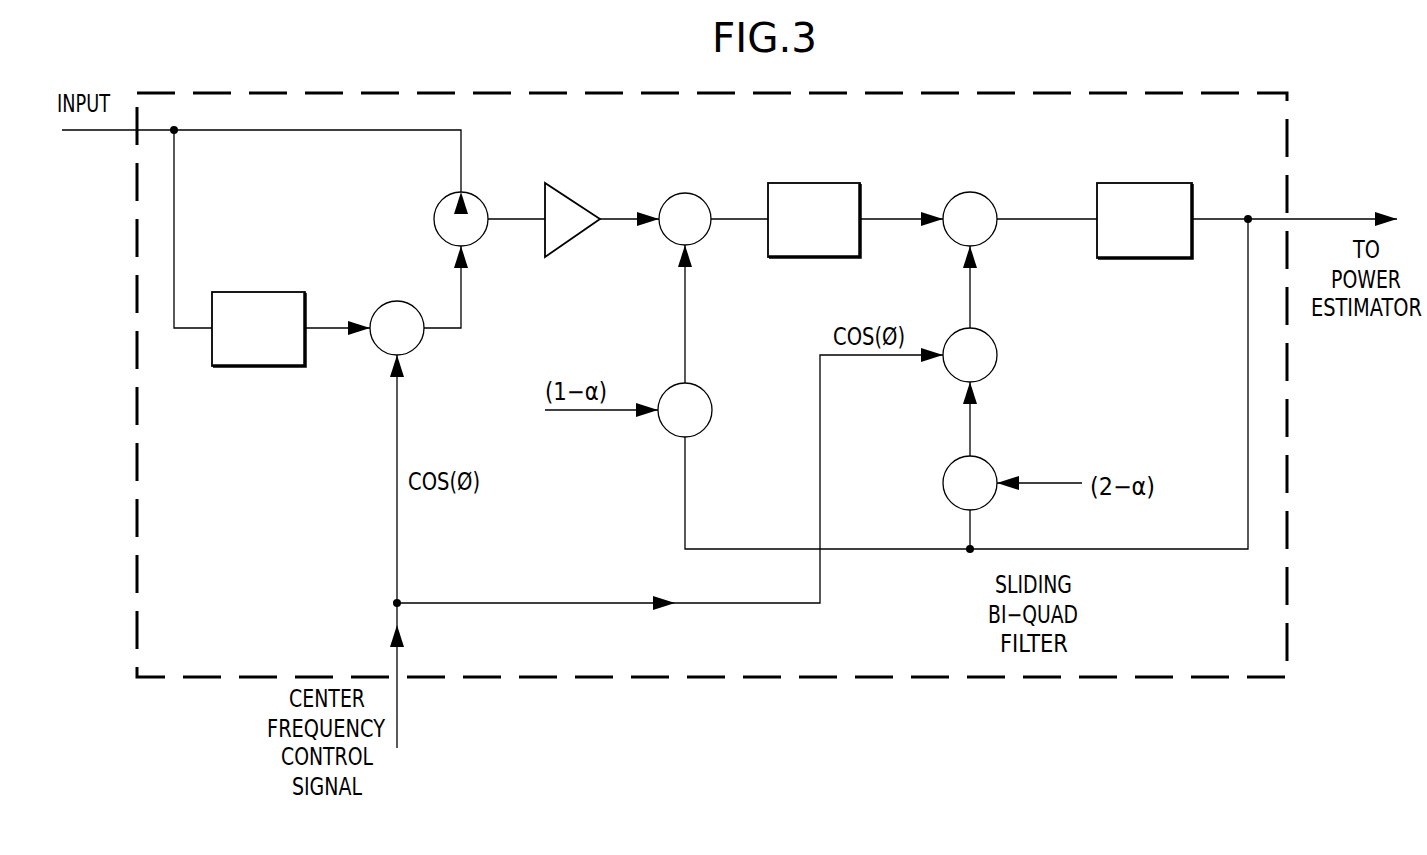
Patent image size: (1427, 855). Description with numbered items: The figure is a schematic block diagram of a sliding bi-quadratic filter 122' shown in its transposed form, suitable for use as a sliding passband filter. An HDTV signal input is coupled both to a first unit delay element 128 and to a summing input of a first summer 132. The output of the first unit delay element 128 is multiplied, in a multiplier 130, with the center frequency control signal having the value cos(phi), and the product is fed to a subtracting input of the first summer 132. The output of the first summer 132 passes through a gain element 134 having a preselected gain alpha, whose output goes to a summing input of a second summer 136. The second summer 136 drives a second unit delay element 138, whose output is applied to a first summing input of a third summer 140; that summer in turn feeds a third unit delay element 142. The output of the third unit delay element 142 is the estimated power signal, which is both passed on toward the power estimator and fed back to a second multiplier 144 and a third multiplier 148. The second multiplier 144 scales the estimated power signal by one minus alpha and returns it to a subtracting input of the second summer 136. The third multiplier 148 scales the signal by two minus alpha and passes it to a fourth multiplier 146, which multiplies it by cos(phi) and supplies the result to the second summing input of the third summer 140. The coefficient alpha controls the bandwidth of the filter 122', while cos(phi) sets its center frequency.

The sliding bi-quadratic filter 122' is at (712, 354).
The first unit delay element 128 is at (262, 366).
The multiplier 130 is at (395, 302).
The first summer 132 is at (479, 199).
The gain element 134 is at (558, 247).
The second summer 136 is at (681, 193).
The second unit delay element 138 is at (813, 183).
The third summer 140 is at (985, 197).
The third unit delay element 142 is at (1143, 183).
The second multiplier 144 is at (707, 396).
The fourth multiplier 146 is at (990, 336).
The third multiplier 148 is at (992, 466).